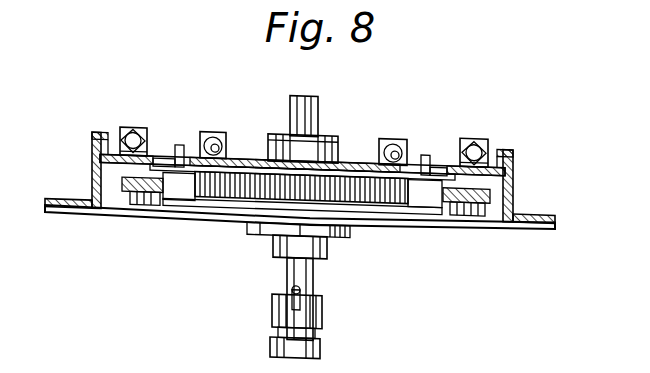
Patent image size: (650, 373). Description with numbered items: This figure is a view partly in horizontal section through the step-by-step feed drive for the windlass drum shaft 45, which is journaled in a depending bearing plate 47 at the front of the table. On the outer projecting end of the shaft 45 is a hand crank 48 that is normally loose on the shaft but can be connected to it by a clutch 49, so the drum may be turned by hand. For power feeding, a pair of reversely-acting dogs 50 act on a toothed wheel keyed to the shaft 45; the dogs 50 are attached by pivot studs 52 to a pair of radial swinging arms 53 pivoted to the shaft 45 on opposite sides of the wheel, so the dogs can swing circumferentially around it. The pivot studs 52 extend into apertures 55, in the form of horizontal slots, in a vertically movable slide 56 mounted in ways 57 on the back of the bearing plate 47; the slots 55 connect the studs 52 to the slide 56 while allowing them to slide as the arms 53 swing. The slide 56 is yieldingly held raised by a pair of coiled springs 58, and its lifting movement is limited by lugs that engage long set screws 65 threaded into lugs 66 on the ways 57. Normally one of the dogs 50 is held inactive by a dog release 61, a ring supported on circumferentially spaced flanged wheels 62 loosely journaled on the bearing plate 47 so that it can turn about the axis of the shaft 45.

The shaft 45 is at (302, 122).
The bearing plate 47 is at (106, 219).
The hand crank 48 is at (322, 326).
The clutch 49 is at (305, 290).
The dogs 50 is at (182, 200).
The pivot studs 52 is at (181, 151).
The radial swinging arms 53 is at (237, 189).
The apertures 55 is at (186, 168).
The slide 56 is at (348, 161).
The ways 57 is at (108, 145).
The coiled springs 58 is at (224, 140).
The dog release 61 is at (134, 210).
The flanged wheels 62 is at (148, 200).
The set screws 65 is at (128, 136).
The lugs 66 is at (140, 133).